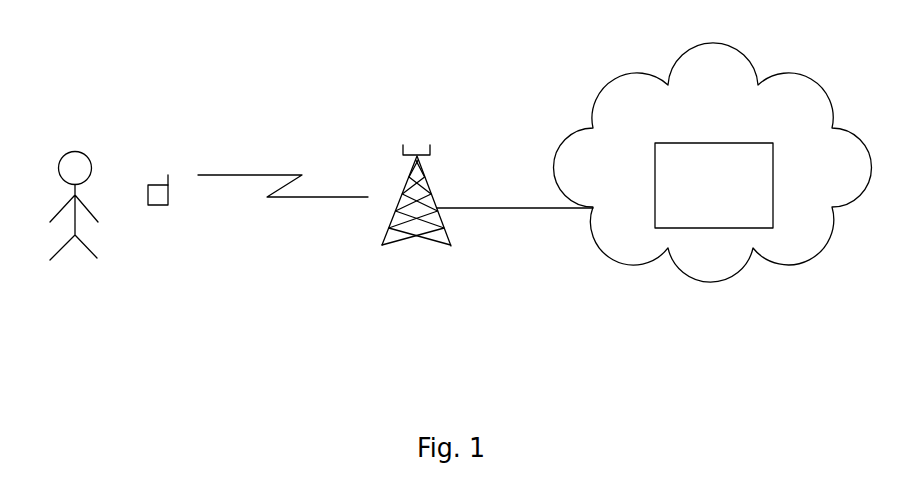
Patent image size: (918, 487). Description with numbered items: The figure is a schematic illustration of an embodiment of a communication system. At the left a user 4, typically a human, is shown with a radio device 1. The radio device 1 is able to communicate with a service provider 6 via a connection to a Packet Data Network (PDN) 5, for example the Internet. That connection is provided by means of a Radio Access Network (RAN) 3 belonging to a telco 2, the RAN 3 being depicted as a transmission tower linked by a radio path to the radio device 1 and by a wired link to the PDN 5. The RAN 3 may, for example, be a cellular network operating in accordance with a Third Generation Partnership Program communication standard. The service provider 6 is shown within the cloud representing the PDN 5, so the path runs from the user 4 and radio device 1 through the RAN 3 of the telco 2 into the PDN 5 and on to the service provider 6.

The radio device 1 is at (158, 200).
The telco 2 is at (486, 98).
The Radio Access Network (RAN) 3 is at (443, 240).
The user 4 is at (93, 254).
The Packet Data Network (PDN) 5 is at (692, 121).
The service provider 6 is at (706, 168).